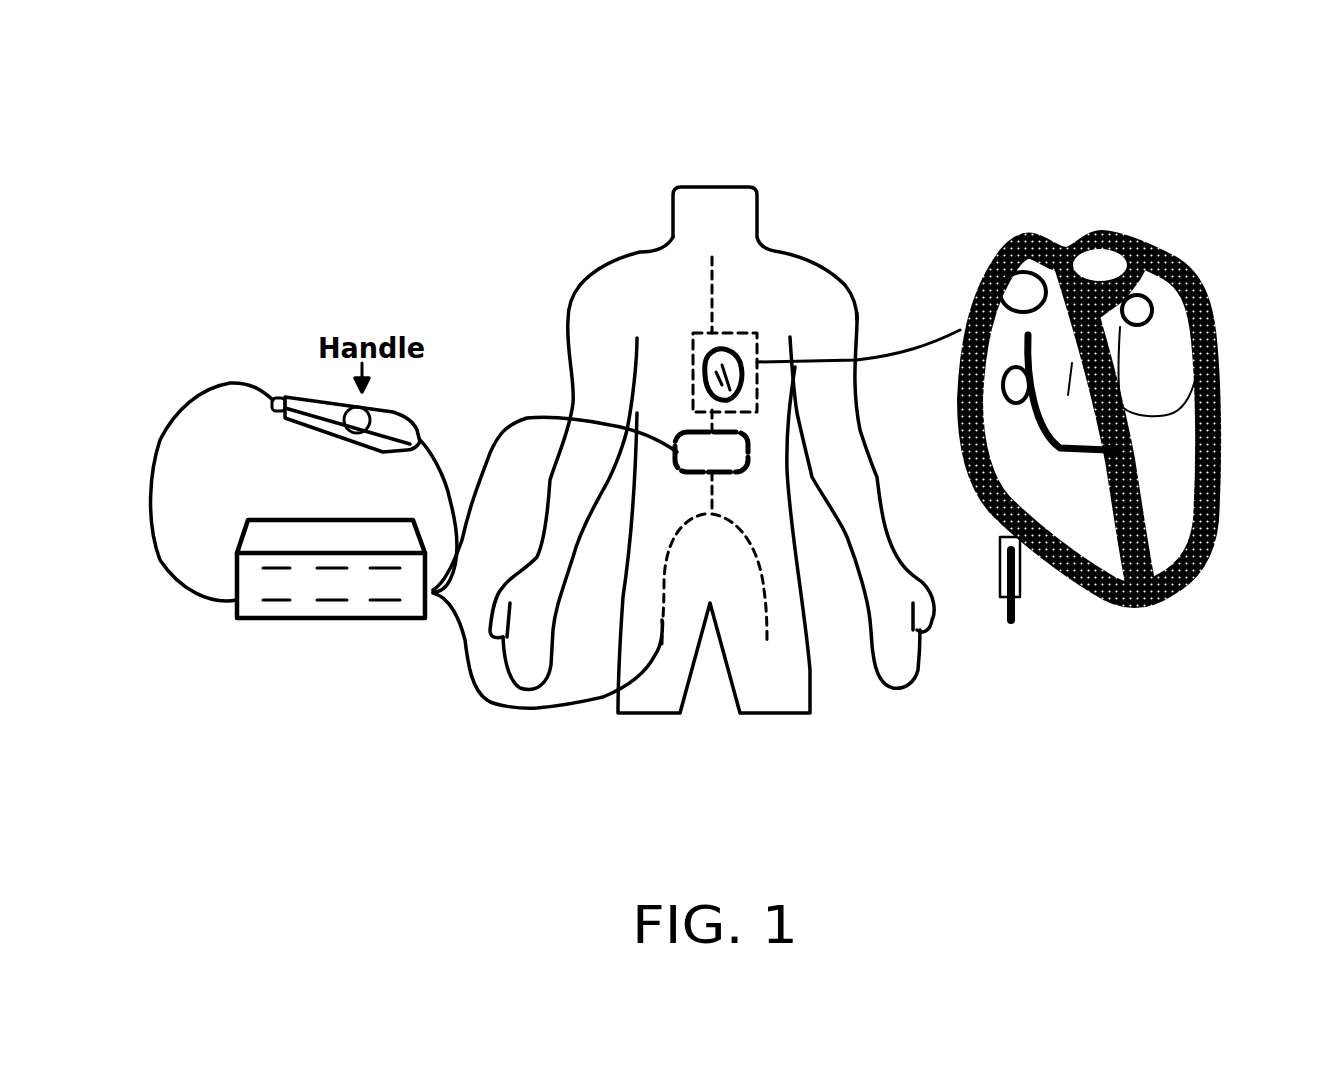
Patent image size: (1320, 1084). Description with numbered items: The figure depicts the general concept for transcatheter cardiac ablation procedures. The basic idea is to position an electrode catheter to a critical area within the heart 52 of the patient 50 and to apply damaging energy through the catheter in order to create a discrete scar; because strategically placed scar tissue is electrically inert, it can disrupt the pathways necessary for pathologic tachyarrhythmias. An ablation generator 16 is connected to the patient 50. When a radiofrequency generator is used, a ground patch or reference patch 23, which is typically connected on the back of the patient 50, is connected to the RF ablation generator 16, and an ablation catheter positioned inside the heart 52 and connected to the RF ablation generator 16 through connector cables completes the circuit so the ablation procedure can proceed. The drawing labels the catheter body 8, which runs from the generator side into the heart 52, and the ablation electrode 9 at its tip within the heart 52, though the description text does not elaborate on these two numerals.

The patient 50 is at (802, 176).
The heart 52 is at (1153, 233).
The reference patch 23 is at (668, 414).
The ablation generator 16 is at (338, 640).
The catheter body 8 is at (602, 715).
The ablation electrode 9 is at (1105, 484).